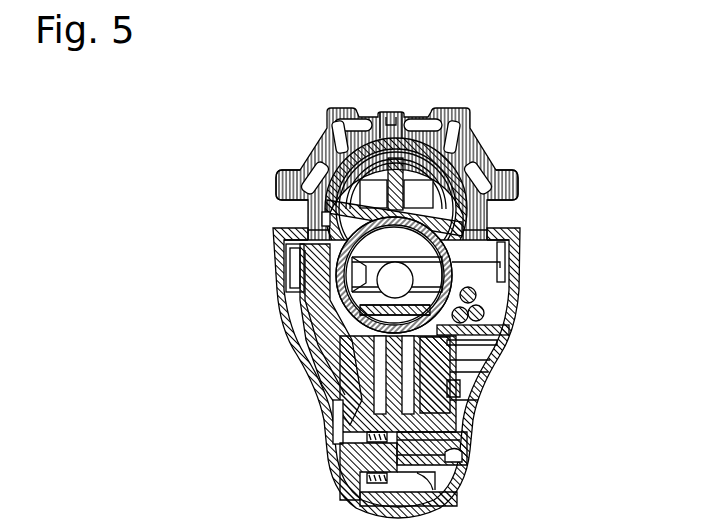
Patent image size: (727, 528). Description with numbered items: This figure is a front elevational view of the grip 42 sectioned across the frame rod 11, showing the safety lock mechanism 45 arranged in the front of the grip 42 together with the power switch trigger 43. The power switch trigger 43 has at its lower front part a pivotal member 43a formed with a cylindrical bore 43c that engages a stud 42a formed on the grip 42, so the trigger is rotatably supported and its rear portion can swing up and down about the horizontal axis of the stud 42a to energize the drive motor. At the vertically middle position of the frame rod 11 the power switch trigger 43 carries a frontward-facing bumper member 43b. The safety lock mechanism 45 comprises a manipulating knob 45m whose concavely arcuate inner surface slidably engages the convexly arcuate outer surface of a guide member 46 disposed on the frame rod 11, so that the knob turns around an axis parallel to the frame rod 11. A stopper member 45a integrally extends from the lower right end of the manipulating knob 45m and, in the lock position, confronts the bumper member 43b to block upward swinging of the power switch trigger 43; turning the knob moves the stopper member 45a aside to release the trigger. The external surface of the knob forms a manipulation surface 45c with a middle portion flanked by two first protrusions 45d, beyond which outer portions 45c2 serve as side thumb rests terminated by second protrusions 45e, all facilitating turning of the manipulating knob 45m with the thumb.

The safety lock mechanism 45 is at (316, 92).
The first protrusions 45d is at (333, 106).
The manipulating knob 45m is at (377, 110).
The manipulation surface 45c is at (407, 108).
The outer portions 45c2 is at (306, 156).
The second protrusions 45e is at (280, 183).
The guide member 46 is at (466, 163).
The stopper member 45a is at (300, 252).
The frame rod 11 is at (458, 276).
The bumper member 43b is at (305, 302).
The grip 42 is at (483, 387).
The power switch trigger 43 is at (325, 398).
The pivotal member 43a is at (327, 468).
The stud 42a is at (462, 447).
The cylindrical bore 43c is at (433, 476).